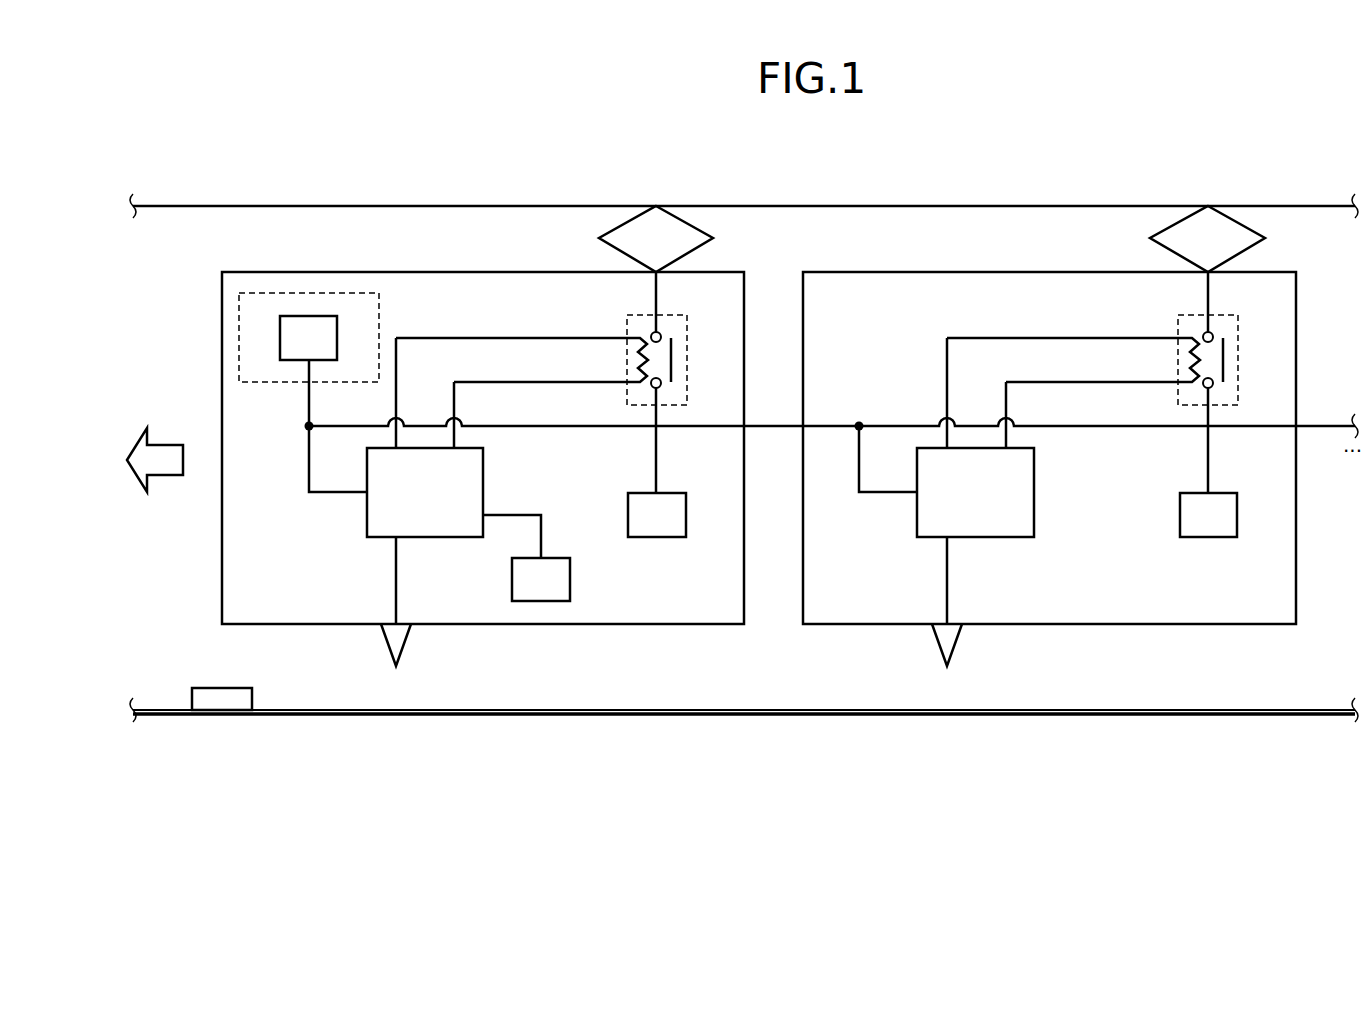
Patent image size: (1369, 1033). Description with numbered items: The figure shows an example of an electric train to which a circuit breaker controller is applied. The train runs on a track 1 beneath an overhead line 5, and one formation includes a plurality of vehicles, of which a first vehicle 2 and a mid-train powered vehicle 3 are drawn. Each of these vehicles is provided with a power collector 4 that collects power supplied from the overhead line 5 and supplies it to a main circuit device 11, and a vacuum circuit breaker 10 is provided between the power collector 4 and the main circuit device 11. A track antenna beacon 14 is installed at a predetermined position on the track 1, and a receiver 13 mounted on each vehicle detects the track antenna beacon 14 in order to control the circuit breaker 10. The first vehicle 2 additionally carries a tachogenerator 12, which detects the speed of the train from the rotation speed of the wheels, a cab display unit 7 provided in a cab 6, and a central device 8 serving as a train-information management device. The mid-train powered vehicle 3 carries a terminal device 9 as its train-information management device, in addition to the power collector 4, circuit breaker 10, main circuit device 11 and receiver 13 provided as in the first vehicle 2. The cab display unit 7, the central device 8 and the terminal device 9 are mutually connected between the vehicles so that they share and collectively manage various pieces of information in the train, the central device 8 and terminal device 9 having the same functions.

The track 1 is at (788, 708).
The first vehicle 2 is at (468, 272).
The mid-train powered vehicle 3 is at (1019, 272).
The power collector 4 is at (713, 238).
The overhead line 5 is at (768, 205).
The cab 6 is at (381, 314).
The cab display unit 7 is at (337, 332).
The central device 8 is at (483, 467).
The terminal device 9 is at (1034, 467).
The vacuum circuit breaker 10 is at (687, 332).
The main circuit device 11 is at (686, 510).
The tachogenerator 12 is at (570, 580).
The receiver 13 is at (405, 648).
The track antenna beacon 14 is at (252, 698).